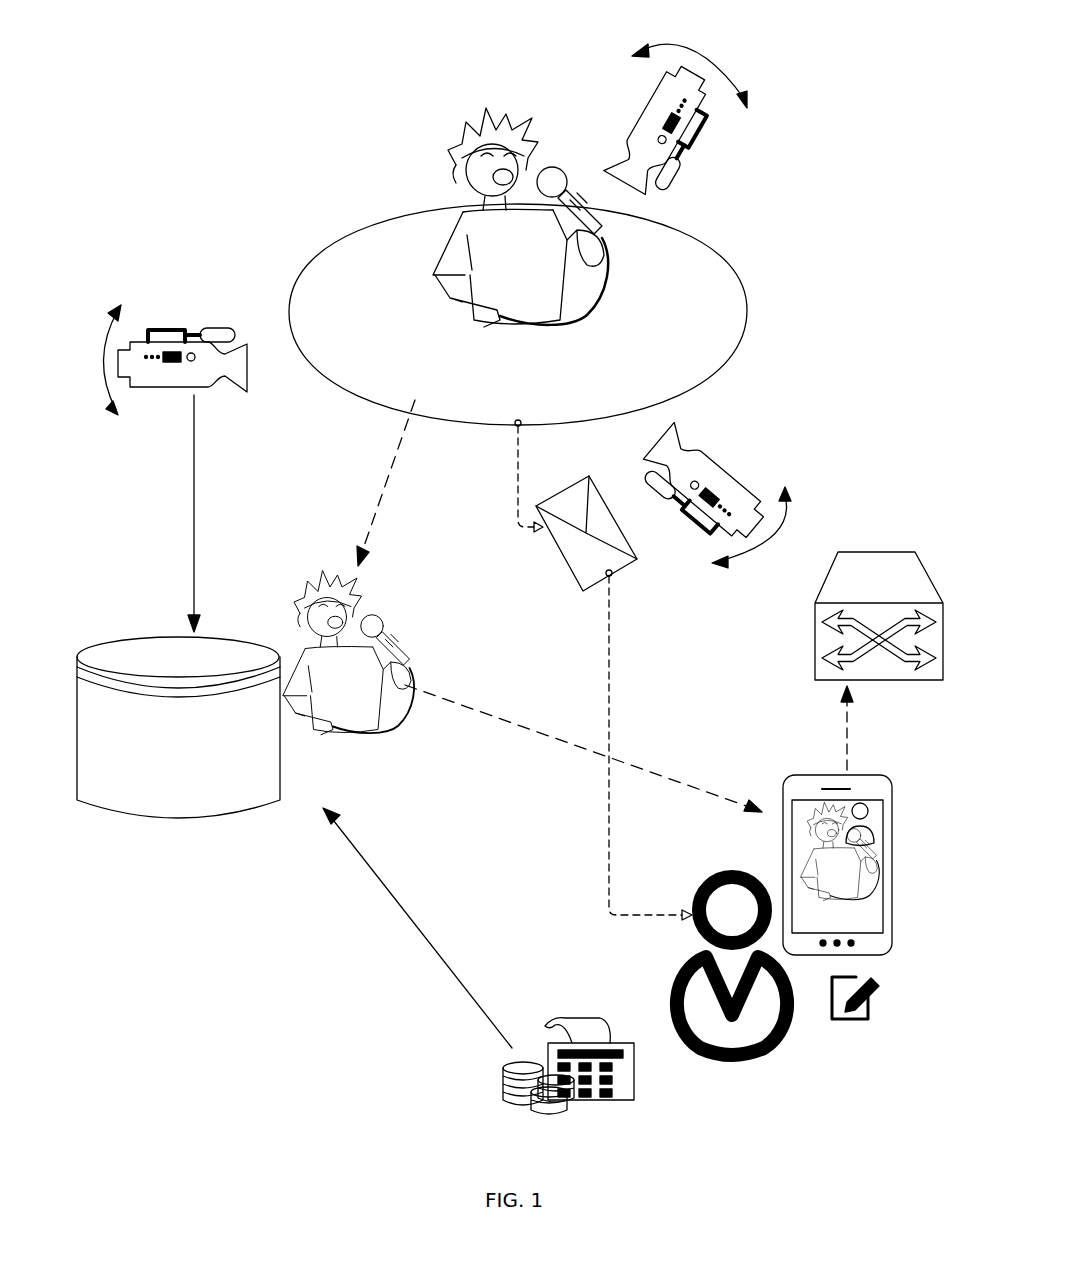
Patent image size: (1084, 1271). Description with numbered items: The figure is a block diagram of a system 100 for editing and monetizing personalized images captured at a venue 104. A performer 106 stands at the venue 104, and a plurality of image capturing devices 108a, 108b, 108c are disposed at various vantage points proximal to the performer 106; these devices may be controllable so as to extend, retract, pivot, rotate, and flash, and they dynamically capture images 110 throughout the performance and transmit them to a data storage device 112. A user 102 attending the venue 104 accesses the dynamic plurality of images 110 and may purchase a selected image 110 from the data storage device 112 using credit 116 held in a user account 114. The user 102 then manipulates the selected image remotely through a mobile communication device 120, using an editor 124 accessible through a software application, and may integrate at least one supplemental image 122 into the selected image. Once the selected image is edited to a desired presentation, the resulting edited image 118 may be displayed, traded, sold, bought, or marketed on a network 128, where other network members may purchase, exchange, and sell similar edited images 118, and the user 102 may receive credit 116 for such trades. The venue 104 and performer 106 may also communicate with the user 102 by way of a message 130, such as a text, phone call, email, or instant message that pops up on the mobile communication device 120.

The system 100 is at (180, 108).
The user 102 is at (793, 1037).
The venue 104 is at (740, 346).
The performer 106 is at (425, 172).
The image capturing device 108a is at (177, 395).
The image capturing device 108b is at (730, 470).
The image capturing device 108c is at (698, 150).
The images 110 is at (403, 639).
The data storage device 112 is at (110, 640).
The user account 114 is at (570, 1008).
The credit 116 is at (398, 843).
The edited image 118 is at (868, 850).
The mobile communication device 120 is at (875, 773).
The supplemental image 122 is at (866, 820).
The editor 124 is at (872, 1017).
The network 128 is at (878, 552).
The message 130 is at (562, 558).